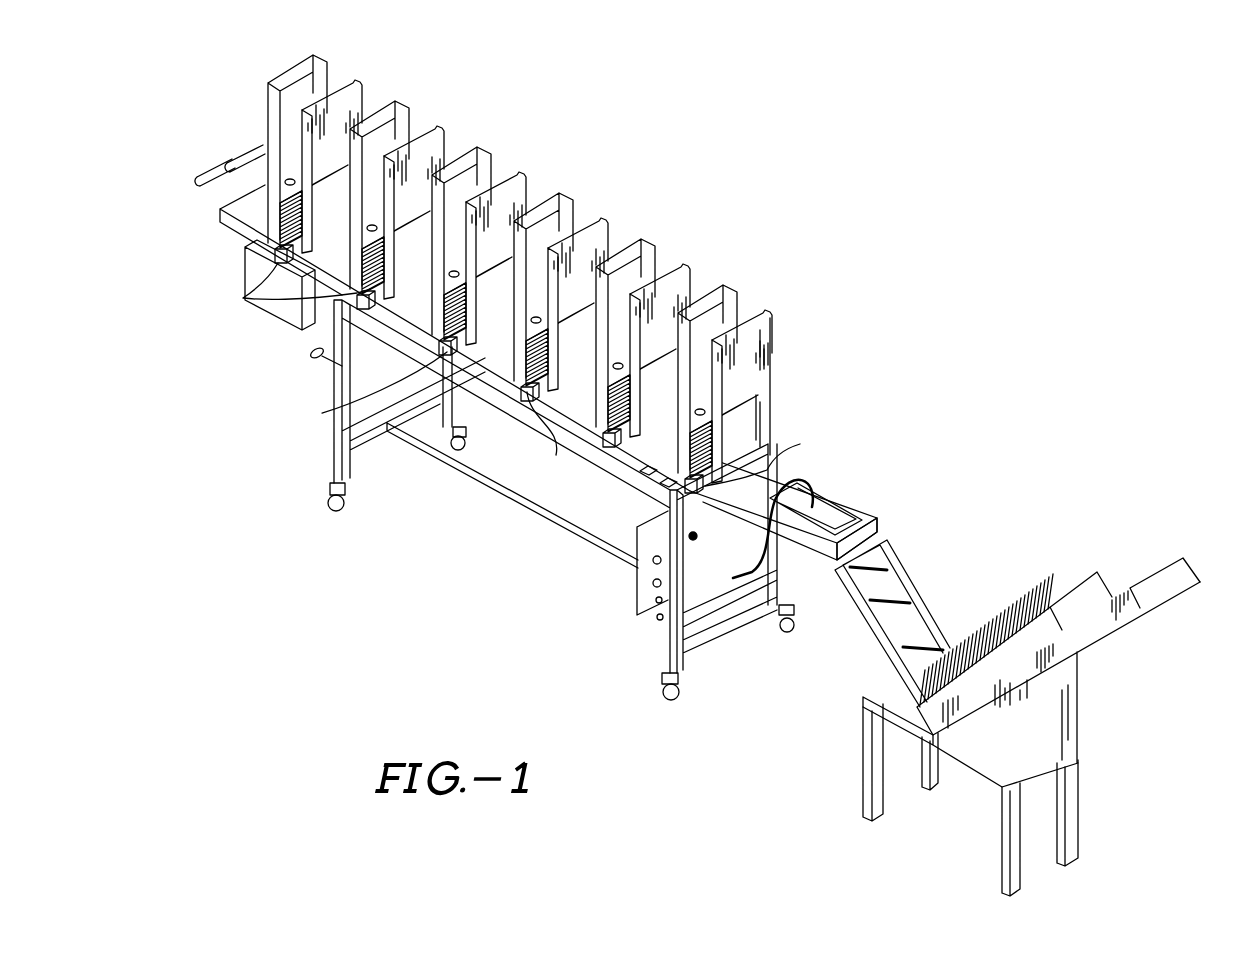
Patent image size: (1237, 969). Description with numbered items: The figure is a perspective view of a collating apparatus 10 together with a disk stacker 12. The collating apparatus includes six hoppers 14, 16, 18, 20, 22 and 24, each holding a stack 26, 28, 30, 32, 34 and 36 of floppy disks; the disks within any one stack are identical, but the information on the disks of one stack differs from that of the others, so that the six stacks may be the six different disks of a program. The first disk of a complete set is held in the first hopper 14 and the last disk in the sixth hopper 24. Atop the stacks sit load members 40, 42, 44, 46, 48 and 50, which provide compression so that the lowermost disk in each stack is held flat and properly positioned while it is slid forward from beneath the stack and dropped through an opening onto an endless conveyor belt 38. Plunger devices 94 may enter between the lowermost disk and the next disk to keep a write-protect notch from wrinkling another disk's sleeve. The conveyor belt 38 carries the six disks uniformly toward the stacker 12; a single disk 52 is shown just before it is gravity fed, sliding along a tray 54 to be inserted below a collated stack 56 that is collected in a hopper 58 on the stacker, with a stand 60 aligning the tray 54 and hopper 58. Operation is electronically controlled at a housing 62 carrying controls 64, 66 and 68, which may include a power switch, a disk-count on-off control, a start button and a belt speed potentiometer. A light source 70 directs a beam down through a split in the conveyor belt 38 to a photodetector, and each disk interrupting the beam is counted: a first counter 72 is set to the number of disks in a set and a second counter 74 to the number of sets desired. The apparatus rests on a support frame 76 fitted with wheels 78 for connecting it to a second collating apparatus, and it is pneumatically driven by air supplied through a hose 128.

The collating apparatus 10 is at (930, 353).
The disk stacker 12 is at (1031, 688).
The first hopper 14 is at (710, 295).
The hopper 16 is at (628, 262).
The hopper 18 is at (546, 210).
The hopper 20 is at (466, 160).
The hopper 22 is at (390, 120).
The sixth hopper 24 is at (308, 74).
The stack of floppy disks 26 is at (703, 455).
The stack of floppy disks 28 is at (620, 408).
The stack of floppy disks 30 is at (538, 360).
The stack of floppy disks 32 is at (456, 318).
The stack of floppy disks 34 is at (374, 270).
The stack of floppy disks 36 is at (292, 225).
The endless conveyor belt 38 is at (867, 523).
The load member 40 is at (290, 178).
The load member 42 is at (374, 228).
The load member 44 is at (456, 275).
The load member 46 is at (538, 320).
The load member 48 is at (620, 372).
The load member 50 is at (702, 416).
The disk 52 is at (832, 518).
The tray 54 is at (892, 625).
The collated stack 56 is at (1008, 620).
The hopper 58 is at (1070, 645).
The stand 60 is at (1050, 722).
The housing 62 is at (652, 560).
The control 64 is at (652, 584).
The control 66 is at (655, 601).
The control 68 is at (660, 621).
The light source 70 is at (815, 497).
The first counter 72 is at (640, 472).
The second counter 74 is at (665, 486).
The support frame 76 is at (531, 526).
The wheels 78 is at (328, 502).
The plunger devices 94 is at (243, 298).
The hose 128 is at (312, 355).